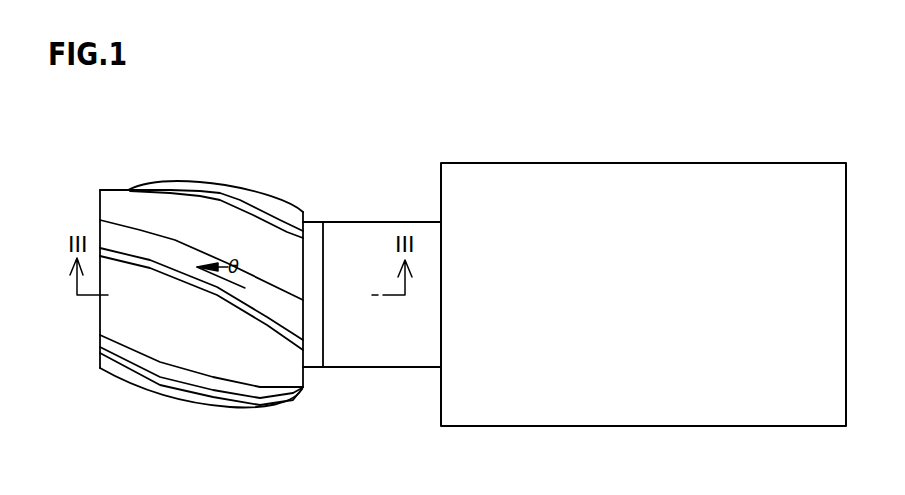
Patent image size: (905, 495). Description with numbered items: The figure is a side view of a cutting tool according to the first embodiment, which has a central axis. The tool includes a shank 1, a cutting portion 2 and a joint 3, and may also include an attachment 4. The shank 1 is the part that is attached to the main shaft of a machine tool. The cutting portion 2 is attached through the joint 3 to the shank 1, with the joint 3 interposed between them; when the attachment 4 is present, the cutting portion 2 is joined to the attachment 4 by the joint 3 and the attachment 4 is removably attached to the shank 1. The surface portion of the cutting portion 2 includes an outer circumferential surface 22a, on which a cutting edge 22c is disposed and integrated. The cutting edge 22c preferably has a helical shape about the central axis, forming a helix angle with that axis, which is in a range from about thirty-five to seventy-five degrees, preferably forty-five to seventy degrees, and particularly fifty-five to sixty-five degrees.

The shank 1 is at (525, 177).
The cutting portion 2 is at (181, 271).
The joint 3 is at (313, 360).
The attachment 4 is at (374, 360).
The outer circumferential surface 22a is at (203, 362).
The cutting edge 22c is at (115, 233).